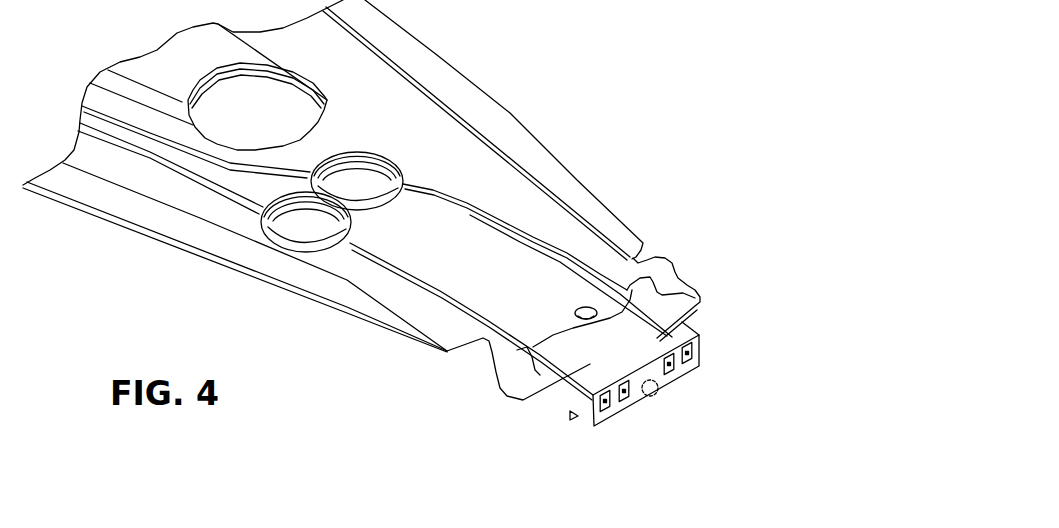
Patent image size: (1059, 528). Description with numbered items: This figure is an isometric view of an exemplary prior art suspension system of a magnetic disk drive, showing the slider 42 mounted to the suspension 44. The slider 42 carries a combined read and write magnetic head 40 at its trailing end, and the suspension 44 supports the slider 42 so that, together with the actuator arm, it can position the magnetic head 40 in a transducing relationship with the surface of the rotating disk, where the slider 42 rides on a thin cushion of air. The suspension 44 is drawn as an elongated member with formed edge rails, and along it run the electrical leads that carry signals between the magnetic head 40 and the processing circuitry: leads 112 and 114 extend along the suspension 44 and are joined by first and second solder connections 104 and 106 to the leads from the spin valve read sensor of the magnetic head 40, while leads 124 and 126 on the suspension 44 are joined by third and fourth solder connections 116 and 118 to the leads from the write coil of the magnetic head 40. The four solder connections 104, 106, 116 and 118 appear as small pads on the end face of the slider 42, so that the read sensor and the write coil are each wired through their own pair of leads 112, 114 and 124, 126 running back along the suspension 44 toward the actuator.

The magnetic head 40 is at (662, 400).
The slider 42 is at (532, 414).
The suspension 44 is at (510, 108).
The first solder connection 104 is at (597, 412).
The second solder connection 106 is at (696, 356).
The lead 112 is at (373, 258).
The lead 114 is at (558, 253).
The third solder connection 116 is at (622, 403).
The fourth solder connection 118 is at (673, 371).
The lead 124 is at (423, 275).
The lead 126 is at (480, 215).